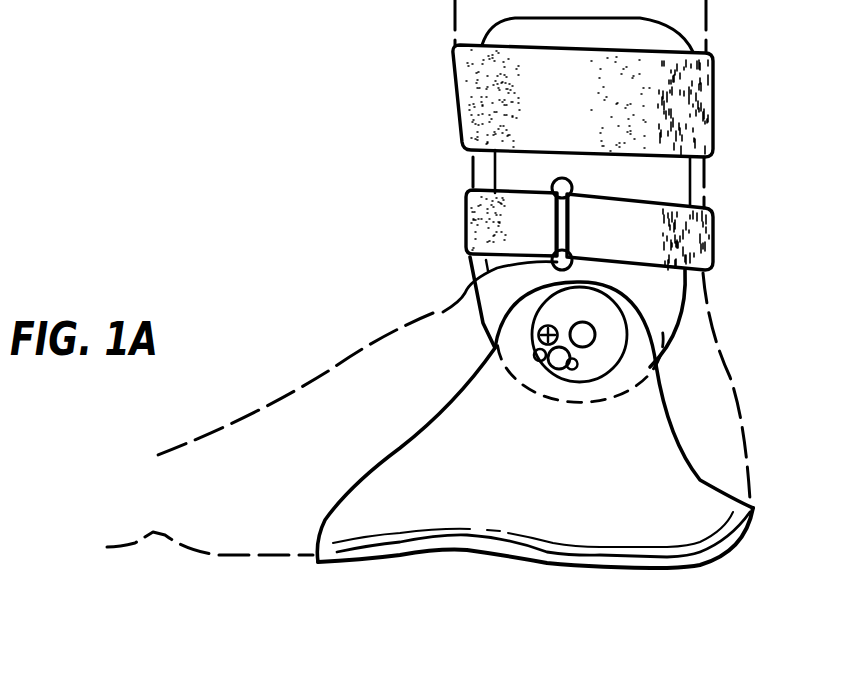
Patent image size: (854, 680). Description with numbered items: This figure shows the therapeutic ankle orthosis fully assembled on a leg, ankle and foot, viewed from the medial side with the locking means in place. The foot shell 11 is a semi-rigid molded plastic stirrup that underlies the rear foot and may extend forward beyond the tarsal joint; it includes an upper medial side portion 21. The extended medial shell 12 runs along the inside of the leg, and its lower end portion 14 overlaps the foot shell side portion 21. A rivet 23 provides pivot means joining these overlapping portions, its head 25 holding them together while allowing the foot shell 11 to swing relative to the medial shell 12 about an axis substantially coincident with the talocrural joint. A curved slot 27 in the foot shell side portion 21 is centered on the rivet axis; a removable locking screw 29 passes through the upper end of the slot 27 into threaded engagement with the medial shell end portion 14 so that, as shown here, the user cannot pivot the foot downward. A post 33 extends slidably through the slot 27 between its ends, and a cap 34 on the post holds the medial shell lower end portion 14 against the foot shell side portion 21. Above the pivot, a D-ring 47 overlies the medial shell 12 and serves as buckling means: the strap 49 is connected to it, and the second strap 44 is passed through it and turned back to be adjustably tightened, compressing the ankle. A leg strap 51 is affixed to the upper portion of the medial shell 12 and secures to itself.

The foot shell 11 is at (535, 571).
The extended medial shell 12 is at (635, 179).
The lower end portion of the medial shell 14 is at (612, 408).
The upper medial side portion of the foot shell 21 is at (512, 287).
The rivet 23 is at (595, 334).
The head 25 is at (591, 324).
The curved slot 27 is at (570, 374).
The locking screw 29 is at (538, 335).
The post 33 is at (534, 353).
The cap 34 is at (547, 357).
The second strap 44 is at (510, 227).
The D-ring 47 is at (548, 182).
The strap 49 is at (725, 237).
The leg strap 51 is at (658, 105).